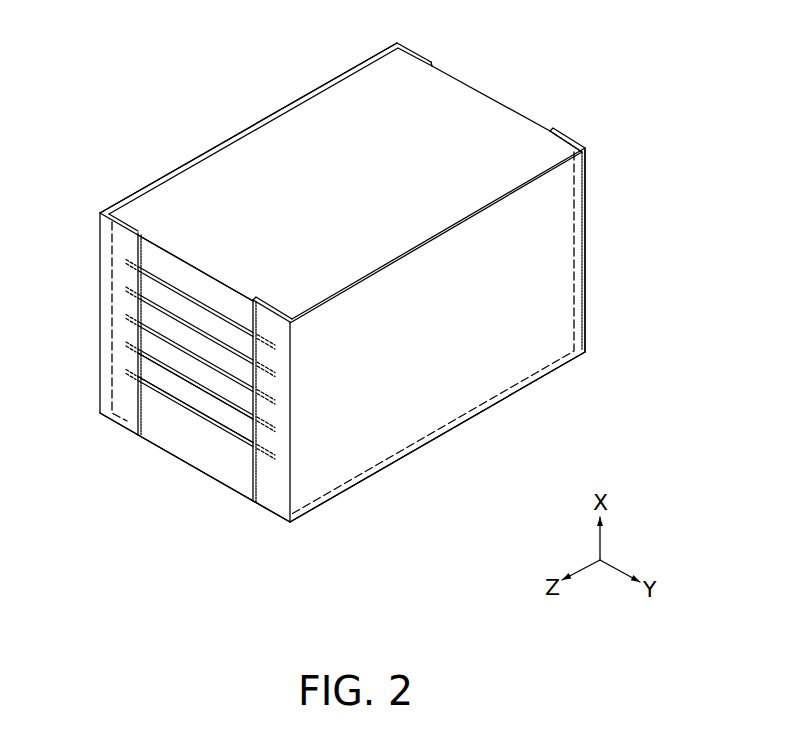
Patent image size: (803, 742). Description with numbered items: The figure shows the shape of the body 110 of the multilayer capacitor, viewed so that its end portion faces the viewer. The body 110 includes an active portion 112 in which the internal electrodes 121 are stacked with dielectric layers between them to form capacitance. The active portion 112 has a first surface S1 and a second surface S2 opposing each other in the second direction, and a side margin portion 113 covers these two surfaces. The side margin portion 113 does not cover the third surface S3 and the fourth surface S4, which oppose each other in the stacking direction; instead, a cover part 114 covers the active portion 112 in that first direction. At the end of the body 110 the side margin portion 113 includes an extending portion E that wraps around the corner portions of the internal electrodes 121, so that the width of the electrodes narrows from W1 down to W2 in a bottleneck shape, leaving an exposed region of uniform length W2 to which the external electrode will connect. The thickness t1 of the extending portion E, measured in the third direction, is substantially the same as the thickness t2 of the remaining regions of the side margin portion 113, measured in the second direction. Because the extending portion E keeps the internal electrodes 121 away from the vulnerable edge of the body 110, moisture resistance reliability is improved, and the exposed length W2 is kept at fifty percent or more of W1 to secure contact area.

The body 110 is at (512, 88).
The active portion 112 is at (145, 363).
The side margin portion 113 is at (397, 427).
The cover part 114 is at (147, 252).
The first internal electrode 121 is at (160, 280).
The extending portion E is at (105, 385).
The first surface S1 is at (523, 287).
The second surface S2 is at (273, 173).
The third surface S3 is at (355, 162).
The fourth surface S4 is at (445, 385).
The thickness of extending portion t1 is at (257, 322).
The thickness of remaining regions of side margin portion t2 is at (578, 156).
The length of body W1 is at (100, 418).
The width of exposed region of internal electrodes W2 is at (255, 547).